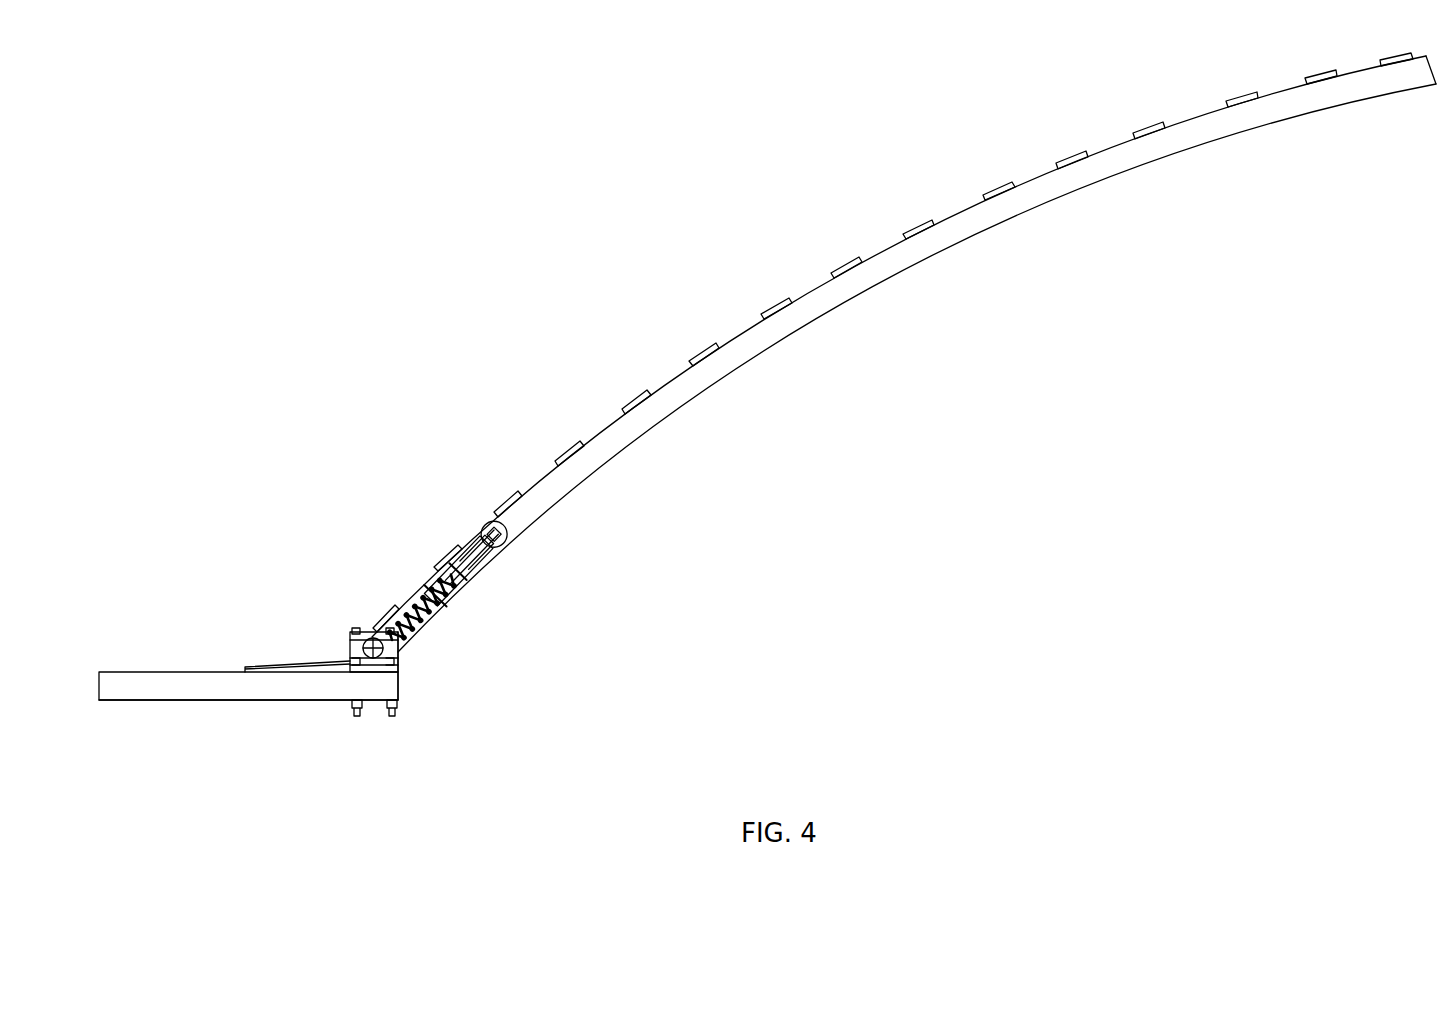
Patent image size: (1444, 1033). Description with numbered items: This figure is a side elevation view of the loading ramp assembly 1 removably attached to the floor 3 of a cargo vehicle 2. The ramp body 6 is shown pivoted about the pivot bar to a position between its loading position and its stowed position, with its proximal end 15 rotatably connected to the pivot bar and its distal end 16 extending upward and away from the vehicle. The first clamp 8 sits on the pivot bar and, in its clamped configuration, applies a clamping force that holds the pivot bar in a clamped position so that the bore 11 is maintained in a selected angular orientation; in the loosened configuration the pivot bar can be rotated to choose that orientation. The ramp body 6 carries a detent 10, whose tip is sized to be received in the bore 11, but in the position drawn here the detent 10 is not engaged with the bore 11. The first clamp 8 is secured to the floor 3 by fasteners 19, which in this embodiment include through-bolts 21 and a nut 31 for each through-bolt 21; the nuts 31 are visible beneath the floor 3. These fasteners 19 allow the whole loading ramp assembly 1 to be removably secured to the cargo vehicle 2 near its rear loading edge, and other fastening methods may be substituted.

The loading ramp assembly 1 is at (904, 352).
The cargo vehicle 2 is at (100, 700).
The floor 3 is at (158, 672).
The ramp body 6 is at (890, 280).
The first clamp 8 is at (350, 643).
The detent 10 is at (485, 575).
The bore 11 is at (355, 632).
The proximal end 15 is at (406, 590).
The distal end 16 is at (1417, 90).
The fastener 19 is at (396, 637).
The through-bolt 21 is at (397, 713).
The nut 31 is at (398, 708).